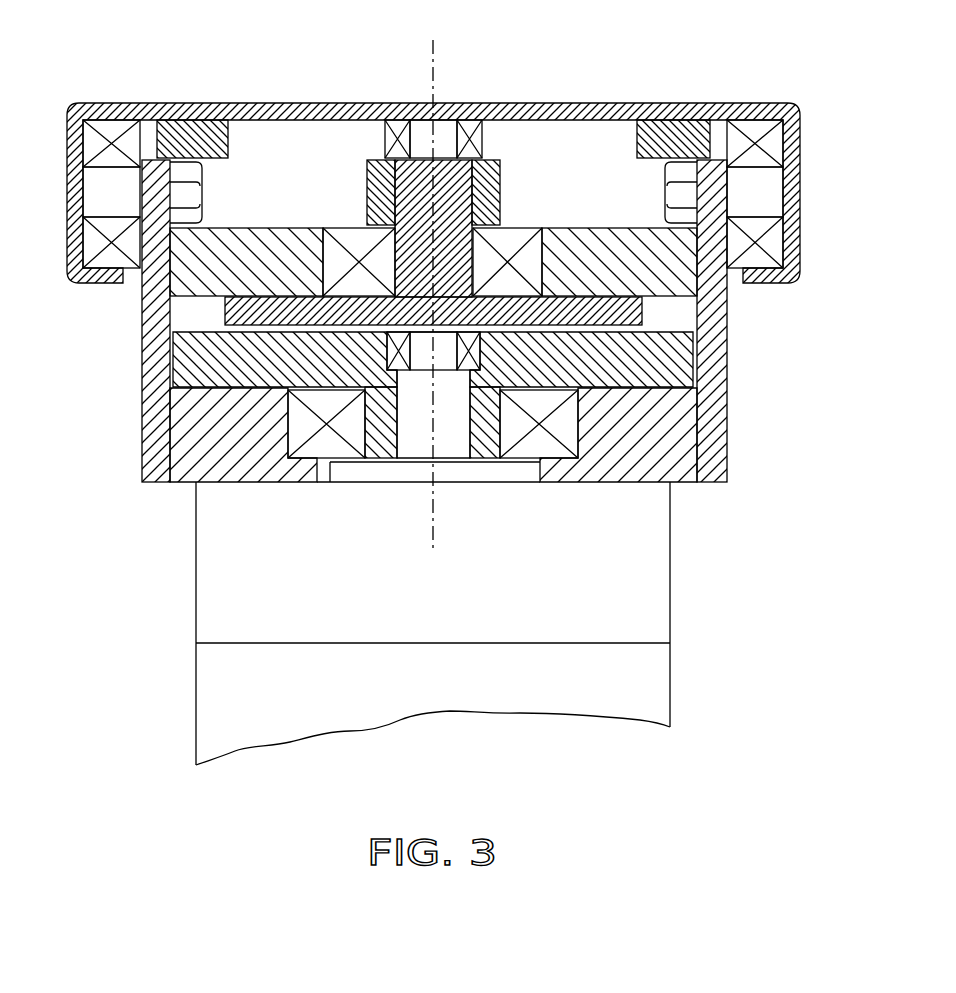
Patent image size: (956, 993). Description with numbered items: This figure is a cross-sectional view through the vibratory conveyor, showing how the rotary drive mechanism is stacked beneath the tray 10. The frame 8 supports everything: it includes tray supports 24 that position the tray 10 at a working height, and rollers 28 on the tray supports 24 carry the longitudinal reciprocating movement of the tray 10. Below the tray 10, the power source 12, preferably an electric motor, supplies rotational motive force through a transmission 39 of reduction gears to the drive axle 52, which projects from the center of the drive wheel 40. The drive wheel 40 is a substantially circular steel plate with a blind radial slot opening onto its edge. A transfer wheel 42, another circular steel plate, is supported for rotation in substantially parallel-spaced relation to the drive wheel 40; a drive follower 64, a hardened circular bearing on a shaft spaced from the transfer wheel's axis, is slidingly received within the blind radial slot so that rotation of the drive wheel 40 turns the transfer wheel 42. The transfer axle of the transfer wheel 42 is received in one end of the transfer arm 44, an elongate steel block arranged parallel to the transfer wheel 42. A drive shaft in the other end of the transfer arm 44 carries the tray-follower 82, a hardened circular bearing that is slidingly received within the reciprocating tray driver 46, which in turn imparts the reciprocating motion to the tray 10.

The tray 10 is at (229, 104).
The rollers 28 is at (112, 130).
The frame 8 is at (288, 247).
The tray-follower 82 is at (482, 137).
The transfer arm 44 is at (500, 193).
The reciprocating tray driver 46 is at (656, 128).
The transfer wheel 42 is at (633, 312).
The drive wheel 40 is at (660, 365).
The tray supports 24 is at (145, 420).
The drive follower 64 is at (418, 372).
The drive axle 52 is at (487, 437).
The transmission 39 is at (630, 580).
The power source 12 is at (656, 691).